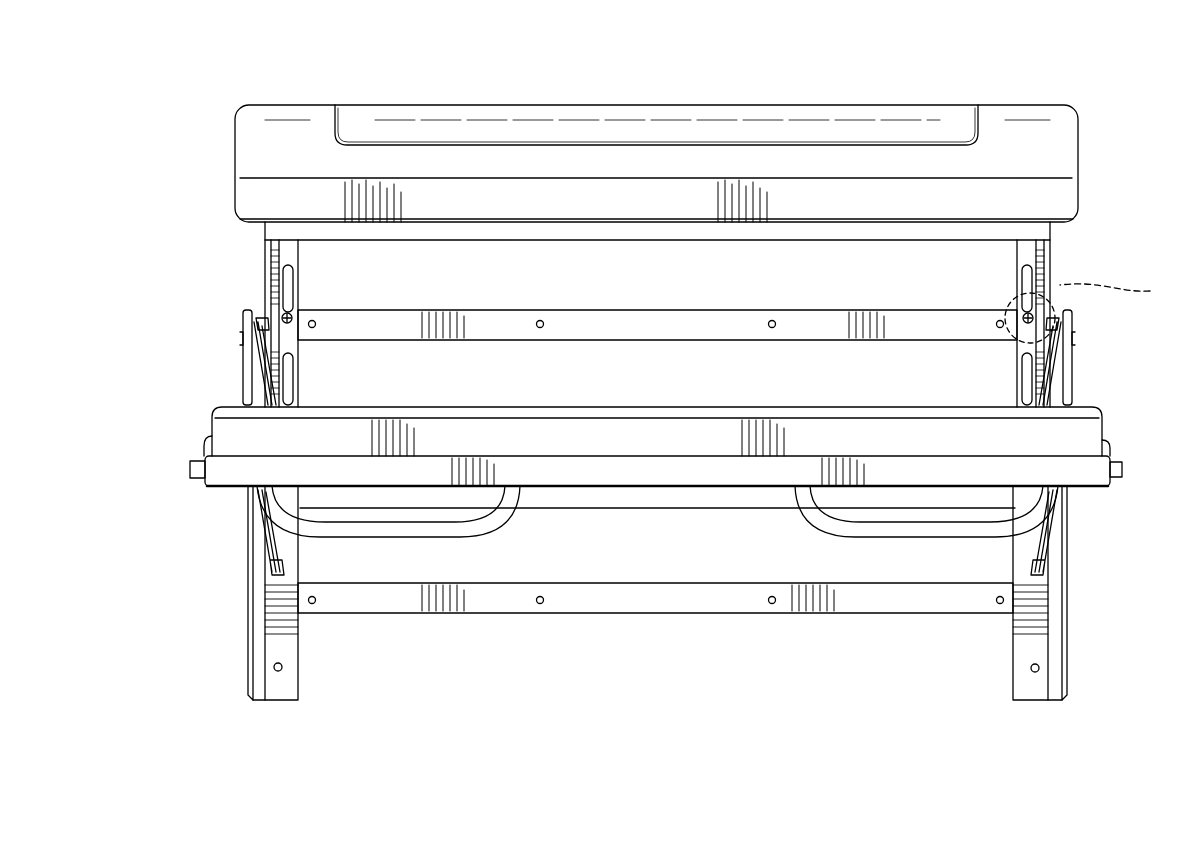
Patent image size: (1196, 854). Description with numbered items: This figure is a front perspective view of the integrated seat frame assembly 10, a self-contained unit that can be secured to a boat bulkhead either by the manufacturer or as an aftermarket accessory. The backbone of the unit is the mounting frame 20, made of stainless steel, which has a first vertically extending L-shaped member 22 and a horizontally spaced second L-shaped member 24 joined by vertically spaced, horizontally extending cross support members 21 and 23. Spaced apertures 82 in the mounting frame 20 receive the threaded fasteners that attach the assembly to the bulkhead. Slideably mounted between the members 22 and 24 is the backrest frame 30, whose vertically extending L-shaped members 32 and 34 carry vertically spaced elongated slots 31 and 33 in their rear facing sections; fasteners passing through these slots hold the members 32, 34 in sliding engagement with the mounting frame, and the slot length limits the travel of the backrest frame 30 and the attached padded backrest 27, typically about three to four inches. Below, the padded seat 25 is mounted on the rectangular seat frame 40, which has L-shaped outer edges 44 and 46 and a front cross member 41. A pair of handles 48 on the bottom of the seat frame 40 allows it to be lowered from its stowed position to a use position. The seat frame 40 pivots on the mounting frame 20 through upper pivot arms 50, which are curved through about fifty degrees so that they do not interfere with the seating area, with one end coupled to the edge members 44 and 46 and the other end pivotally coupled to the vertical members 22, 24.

The seat frame assembly 10 is at (1136, 158).
The mounting frame 20 is at (699, 612).
The cross support member 21 is at (680, 302).
The first vertically extending L-shaped member 22 is at (300, 645).
The cross support member 23 is at (648, 582).
The second L-shaped vertically extending member 24 is at (1013, 645).
The padded seat 25 is at (695, 408).
The padded backrest 27 is at (660, 160).
The backrest frame 30 is at (730, 295).
The elongated slot 31 is at (290, 292).
The vertically extending L-shaped member 32 is at (290, 247).
The elongated slot 33 is at (1050, 256).
The vertically extending L-shaped member 34 is at (1025, 252).
The seat frame 40 is at (691, 456).
The front cross member 41 is at (583, 470).
The L-shaped outer edge 44 is at (225, 495).
The L-shaped outer edge 46 is at (1085, 492).
The handle 48 is at (385, 537).
The upper pivot arm 50 is at (258, 378).
The aperture 82 is at (315, 326).